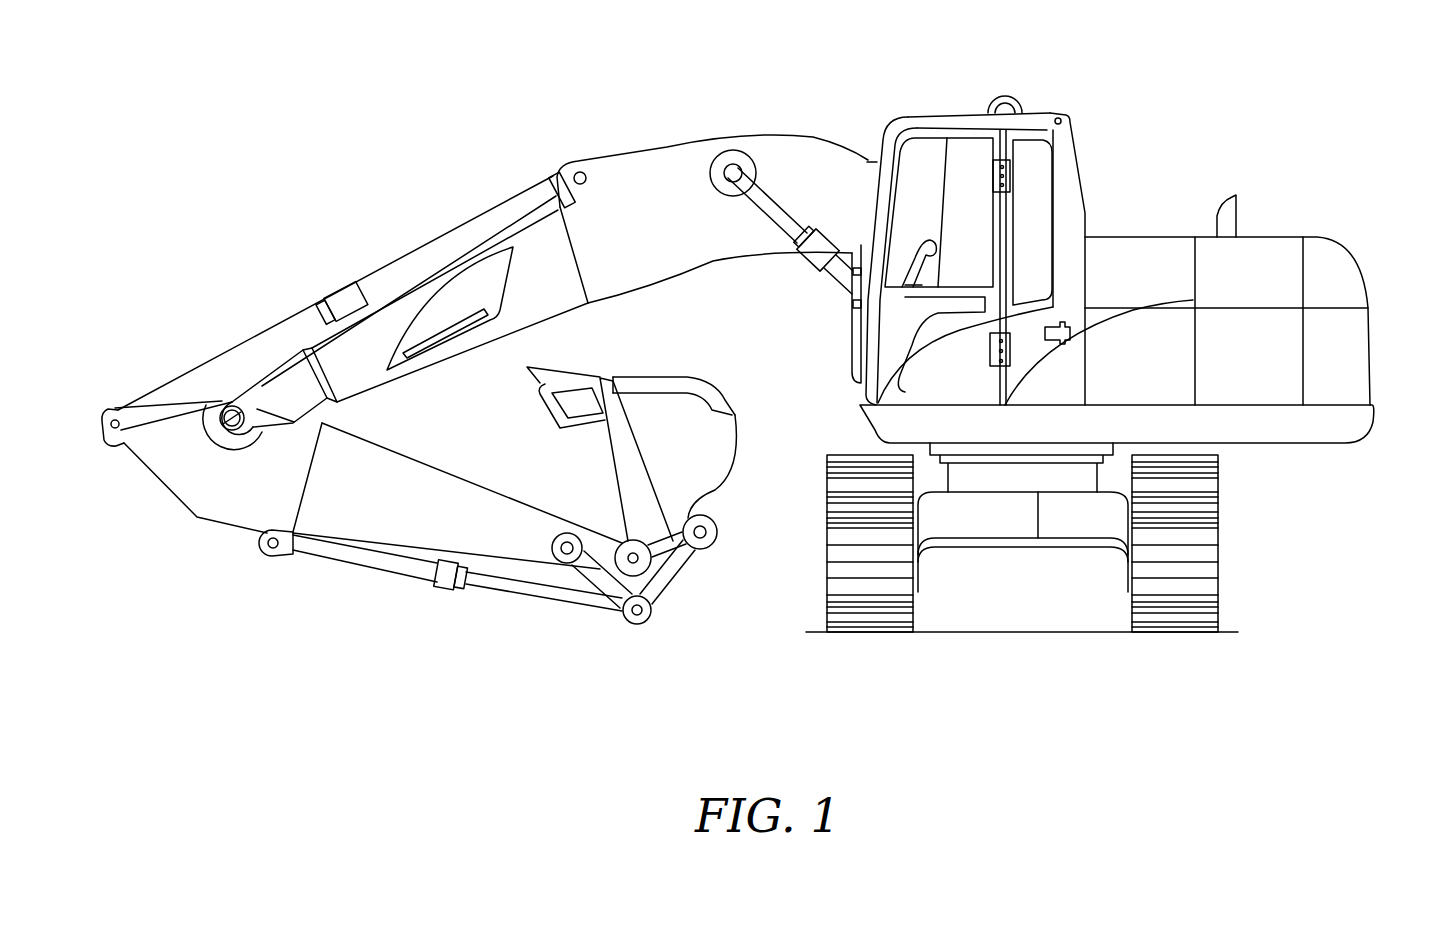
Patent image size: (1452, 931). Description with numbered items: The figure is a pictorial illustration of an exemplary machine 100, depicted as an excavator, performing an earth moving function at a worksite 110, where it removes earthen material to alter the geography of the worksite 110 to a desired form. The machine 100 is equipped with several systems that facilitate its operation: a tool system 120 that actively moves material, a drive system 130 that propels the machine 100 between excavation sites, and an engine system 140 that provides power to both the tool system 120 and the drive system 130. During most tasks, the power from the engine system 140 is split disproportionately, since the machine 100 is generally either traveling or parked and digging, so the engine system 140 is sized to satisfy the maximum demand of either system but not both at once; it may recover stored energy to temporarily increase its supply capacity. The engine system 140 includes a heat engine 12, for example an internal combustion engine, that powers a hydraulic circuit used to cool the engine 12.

The machine 100 is at (1238, 92).
The worksite 110 is at (223, 227).
The tool system 120 is at (735, 620).
The drive system 130 is at (1250, 455).
The engine system 140 is at (1368, 230).
The heat engine 12 is at (1250, 357).